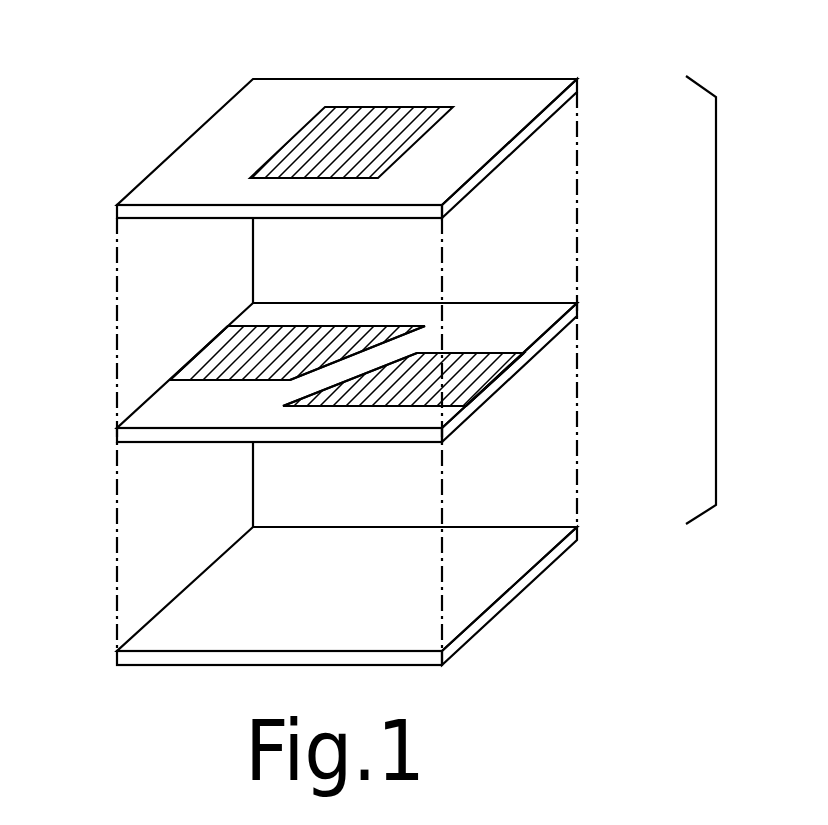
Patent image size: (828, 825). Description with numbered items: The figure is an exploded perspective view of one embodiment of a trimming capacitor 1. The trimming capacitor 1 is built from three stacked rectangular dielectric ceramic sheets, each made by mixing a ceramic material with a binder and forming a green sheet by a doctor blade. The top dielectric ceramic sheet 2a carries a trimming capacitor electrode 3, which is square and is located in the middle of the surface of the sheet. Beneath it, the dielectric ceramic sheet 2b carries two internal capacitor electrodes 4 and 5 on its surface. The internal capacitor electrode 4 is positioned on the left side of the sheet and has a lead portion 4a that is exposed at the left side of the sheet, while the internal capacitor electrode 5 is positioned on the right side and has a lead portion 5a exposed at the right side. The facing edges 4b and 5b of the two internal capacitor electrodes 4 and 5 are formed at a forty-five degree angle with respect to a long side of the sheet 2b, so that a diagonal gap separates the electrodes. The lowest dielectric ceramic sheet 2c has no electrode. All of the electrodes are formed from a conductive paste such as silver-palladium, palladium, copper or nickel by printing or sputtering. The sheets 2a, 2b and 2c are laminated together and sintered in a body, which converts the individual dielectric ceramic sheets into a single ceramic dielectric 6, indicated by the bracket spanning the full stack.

The trimming capacitor 1 is at (70, 140).
The dielectric ceramic sheet 2a is at (523, 142).
The dielectric ceramic sheet 2b is at (495, 303).
The dielectric ceramic sheet 2c is at (490, 537).
The trimming capacitor electrode 3 is at (385, 108).
The internal capacitor electrode 4 is at (282, 333).
The lead portion 4a is at (213, 342).
The edge 4b is at (369, 350).
The internal capacitor electrode 5 is at (465, 353).
The lead portion 5a is at (477, 393).
The edge 5b is at (350, 402).
The ceramic dielectric 6 is at (714, 300).